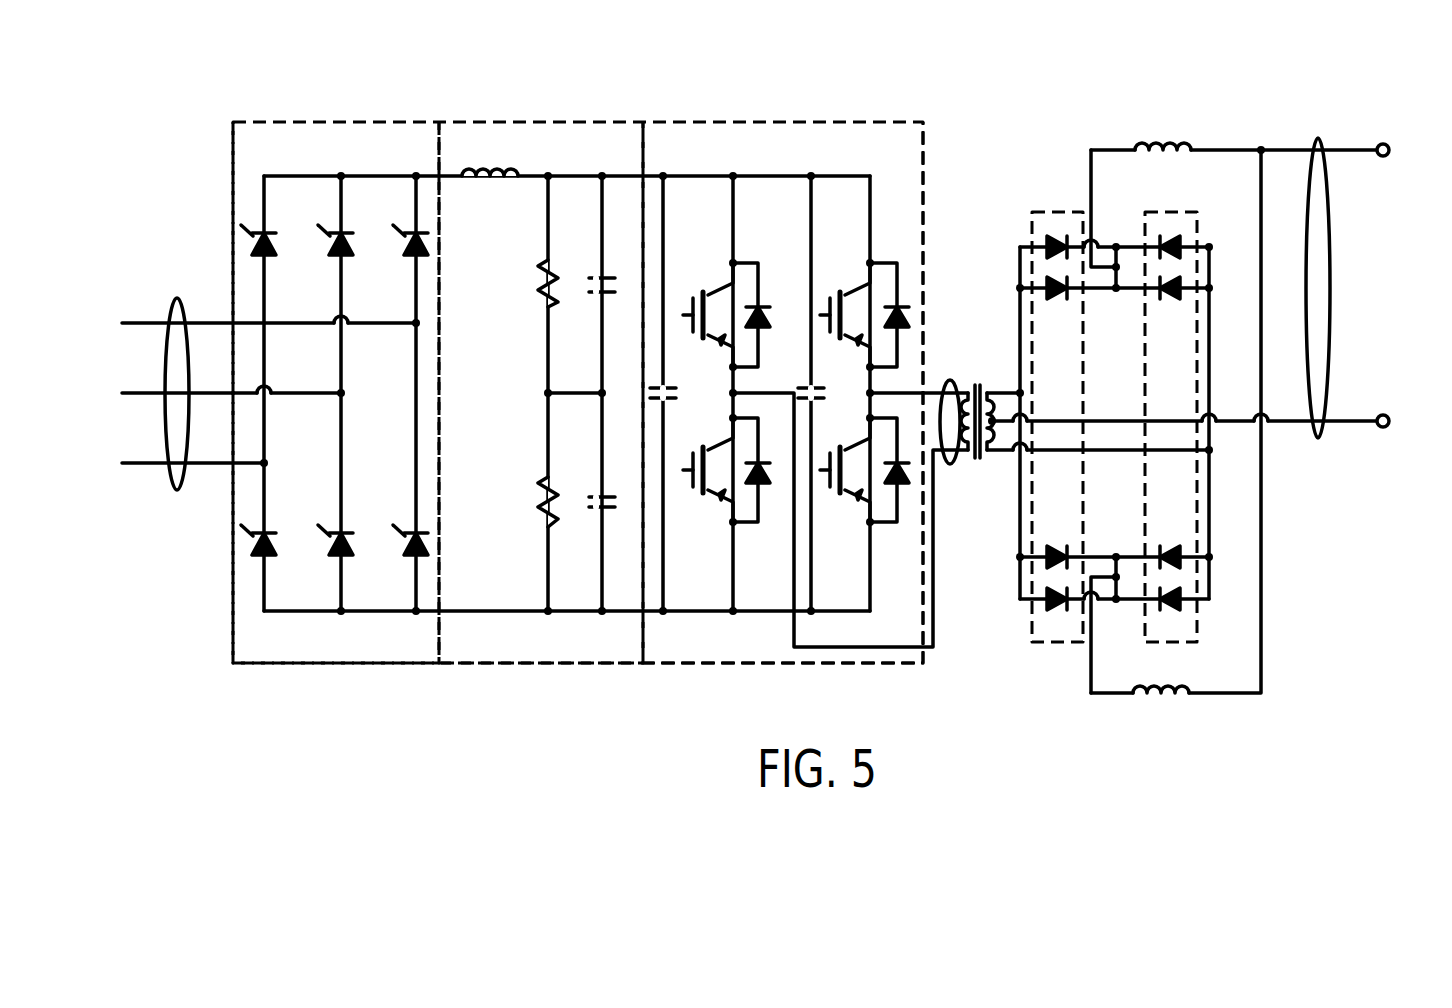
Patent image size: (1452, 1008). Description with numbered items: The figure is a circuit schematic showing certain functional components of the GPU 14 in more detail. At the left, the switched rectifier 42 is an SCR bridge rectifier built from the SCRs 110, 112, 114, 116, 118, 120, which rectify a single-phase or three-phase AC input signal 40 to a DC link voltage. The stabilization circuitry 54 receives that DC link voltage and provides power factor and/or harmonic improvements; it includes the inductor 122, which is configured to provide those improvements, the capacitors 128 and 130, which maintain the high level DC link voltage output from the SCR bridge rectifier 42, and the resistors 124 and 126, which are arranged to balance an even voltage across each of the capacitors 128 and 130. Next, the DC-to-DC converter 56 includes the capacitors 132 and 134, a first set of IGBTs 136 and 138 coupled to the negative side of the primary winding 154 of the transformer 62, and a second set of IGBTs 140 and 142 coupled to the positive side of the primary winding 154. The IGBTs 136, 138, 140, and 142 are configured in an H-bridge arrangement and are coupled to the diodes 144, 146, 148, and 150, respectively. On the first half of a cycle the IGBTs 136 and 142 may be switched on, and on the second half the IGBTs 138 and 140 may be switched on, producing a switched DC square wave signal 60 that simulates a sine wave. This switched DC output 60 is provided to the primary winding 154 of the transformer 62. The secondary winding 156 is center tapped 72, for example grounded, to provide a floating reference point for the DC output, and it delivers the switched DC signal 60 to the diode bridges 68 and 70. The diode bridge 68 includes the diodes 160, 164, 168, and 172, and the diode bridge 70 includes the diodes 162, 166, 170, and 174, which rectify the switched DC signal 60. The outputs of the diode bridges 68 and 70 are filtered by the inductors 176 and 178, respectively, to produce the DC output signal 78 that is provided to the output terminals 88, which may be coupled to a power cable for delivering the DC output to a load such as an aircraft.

The GPU 14 is at (808, 62).
The AC input signal 40 is at (170, 318).
The switched rectifier 42 is at (346, 121).
The stabilization circuitry 54 is at (580, 121).
The DC-to-DC converter 56 is at (792, 121).
The switched DC square wave signal 60 is at (968, 468).
The transformer 62 is at (966, 382).
The diode bridge 68 is at (1030, 230).
The diode bridge 70 is at (1200, 230).
The center tap 72 is at (1000, 421).
The DC output 78 is at (1313, 140).
The output terminals 88 is at (1370, 148).
The SCR 110 is at (253, 245).
The SCR 112 is at (330, 244).
The SCR 114 is at (406, 244).
The SCR 116 is at (253, 545).
The SCR 118 is at (330, 545).
The SCR 120 is at (406, 545).
The inductor 122 is at (500, 168).
The resistor 124 is at (538, 295).
The resistor 126 is at (540, 500).
The capacitor 128 is at (598, 496).
The capacitor 130 is at (595, 292).
The capacitor 132 is at (668, 380).
The capacitor 134 is at (815, 388).
The IGBT 136 is at (712, 338).
The IGBT 138 is at (712, 493).
The IGBT 140 is at (850, 295).
The IGBT 142 is at (853, 450).
The diode 144 is at (770, 318).
The diode 146 is at (765, 485).
The diode 148 is at (905, 318).
The diode 150 is at (903, 488).
The primary winding 154 is at (988, 456).
The secondary winding 156 is at (987, 390).
The diode 160 is at (1063, 237).
The diode 162 is at (1170, 237).
The diode 164 is at (1060, 299).
The diode 166 is at (1168, 299).
The diode 168 is at (1062, 546).
The diode 170 is at (1170, 546).
The diode 172 is at (1060, 610).
The diode 174 is at (1165, 610).
The inductor 176 is at (1140, 145).
The inductor 178 is at (1198, 700).